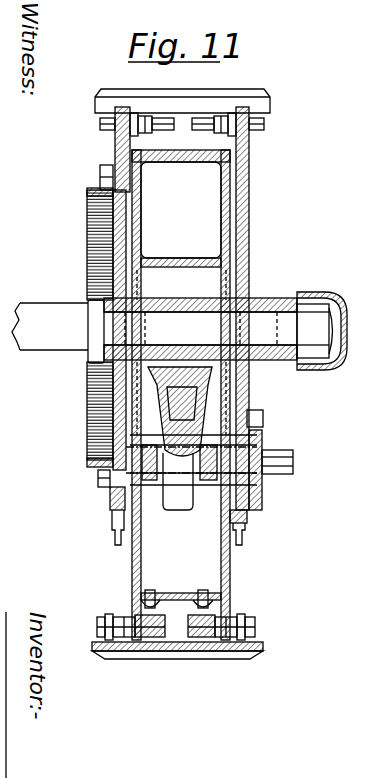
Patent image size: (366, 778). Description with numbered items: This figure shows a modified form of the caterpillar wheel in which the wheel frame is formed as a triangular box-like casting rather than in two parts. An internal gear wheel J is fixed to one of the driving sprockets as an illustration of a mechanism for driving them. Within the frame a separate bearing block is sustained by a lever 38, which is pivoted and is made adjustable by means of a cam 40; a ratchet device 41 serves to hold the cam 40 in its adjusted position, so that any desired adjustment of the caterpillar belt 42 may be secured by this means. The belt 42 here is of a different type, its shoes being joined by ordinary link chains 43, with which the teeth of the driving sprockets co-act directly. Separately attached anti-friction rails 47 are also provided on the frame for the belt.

The internal gear wheel J is at (86, 442).
The lever 38 is at (212, 380).
The cam 40 is at (188, 505).
The ratchet device 41 is at (255, 476).
The caterpillar belt 42 is at (205, 651).
The link chains 43 is at (120, 618).
The anti-friction rails 47 is at (200, 602).